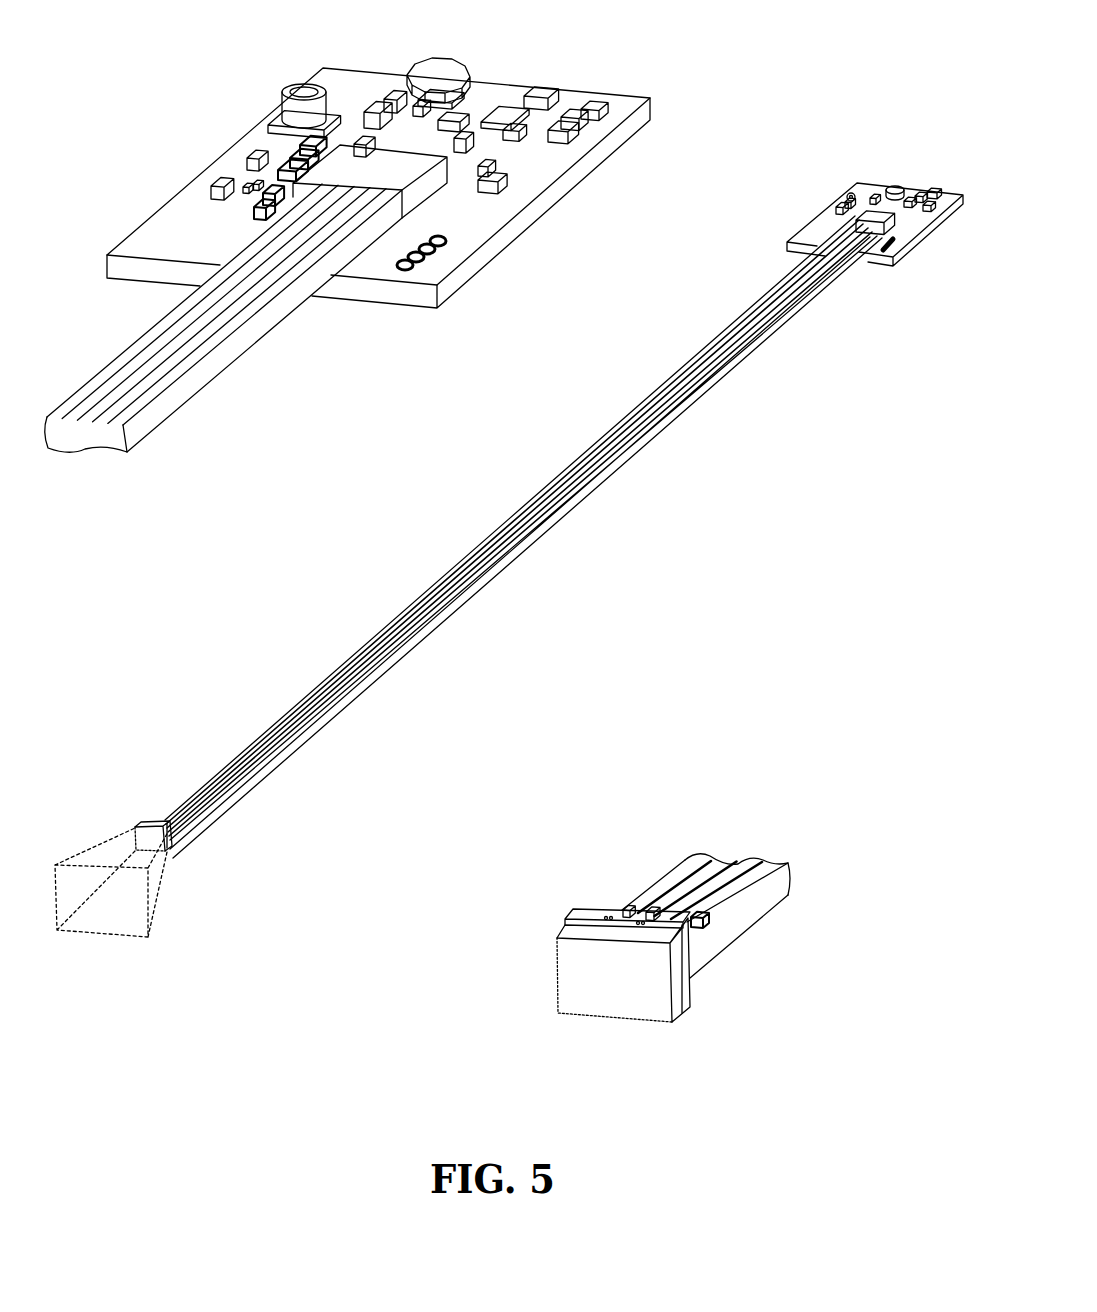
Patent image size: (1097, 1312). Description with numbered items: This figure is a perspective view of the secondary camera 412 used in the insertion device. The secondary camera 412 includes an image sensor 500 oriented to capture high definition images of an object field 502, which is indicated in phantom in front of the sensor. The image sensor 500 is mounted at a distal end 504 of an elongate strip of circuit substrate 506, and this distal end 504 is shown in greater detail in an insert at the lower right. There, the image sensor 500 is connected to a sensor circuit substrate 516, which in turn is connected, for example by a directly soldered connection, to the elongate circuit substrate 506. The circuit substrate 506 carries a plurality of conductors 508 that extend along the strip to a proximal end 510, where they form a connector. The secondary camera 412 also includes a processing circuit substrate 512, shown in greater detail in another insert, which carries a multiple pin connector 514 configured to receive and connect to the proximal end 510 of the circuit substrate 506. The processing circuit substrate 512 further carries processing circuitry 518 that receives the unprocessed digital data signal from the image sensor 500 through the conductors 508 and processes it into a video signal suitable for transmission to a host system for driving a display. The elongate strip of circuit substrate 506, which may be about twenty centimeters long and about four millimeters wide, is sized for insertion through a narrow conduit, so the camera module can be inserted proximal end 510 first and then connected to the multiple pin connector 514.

The secondary camera 412 is at (418, 450).
The image sensor 500 is at (143, 838).
The object field 502 is at (138, 919).
The distal end 504 is at (183, 848).
The circuit substrate 506 is at (180, 307).
The conductors 508 is at (106, 408).
The proximal end 510 is at (160, 123).
The processing circuit substrate 512 is at (523, 190).
The multiple pin connector 514 is at (358, 180).
The sensor circuit substrate 516 is at (685, 992).
The processing circuitry 518 is at (566, 74).